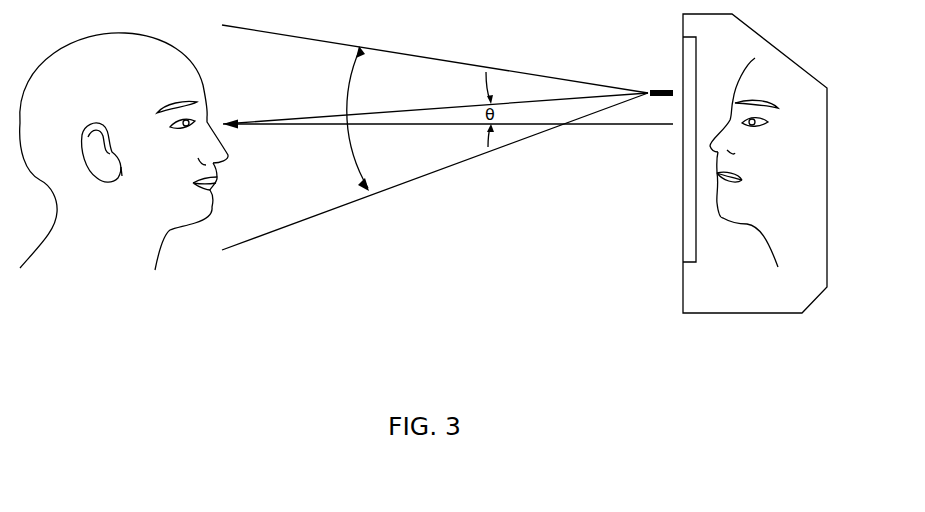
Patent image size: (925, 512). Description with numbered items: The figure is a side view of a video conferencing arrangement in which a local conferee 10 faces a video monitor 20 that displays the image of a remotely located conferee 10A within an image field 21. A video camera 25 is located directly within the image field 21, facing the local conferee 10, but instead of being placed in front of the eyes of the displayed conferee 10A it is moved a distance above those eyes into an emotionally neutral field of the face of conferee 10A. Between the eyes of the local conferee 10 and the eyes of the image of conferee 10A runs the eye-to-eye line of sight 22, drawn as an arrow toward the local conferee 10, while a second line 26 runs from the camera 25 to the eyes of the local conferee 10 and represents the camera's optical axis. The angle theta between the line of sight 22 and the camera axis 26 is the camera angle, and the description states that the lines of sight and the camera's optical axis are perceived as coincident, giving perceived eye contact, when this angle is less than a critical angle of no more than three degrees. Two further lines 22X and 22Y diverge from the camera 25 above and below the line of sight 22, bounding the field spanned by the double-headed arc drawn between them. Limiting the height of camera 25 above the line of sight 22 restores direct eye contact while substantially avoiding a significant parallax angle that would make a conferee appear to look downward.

The local conferee 10 is at (188, 228).
The remote conferee 10A is at (745, 225).
The video monitor 20 is at (707, 313).
The image field 21 is at (683, 232).
The eye-to-eye line of sight 22 is at (290, 124).
The upper boundary of field of view 22X is at (462, 63).
The lower boundary of field of view 22Y is at (452, 165).
The video camera 25 is at (660, 90).
The camera optical axis 26 is at (405, 110).